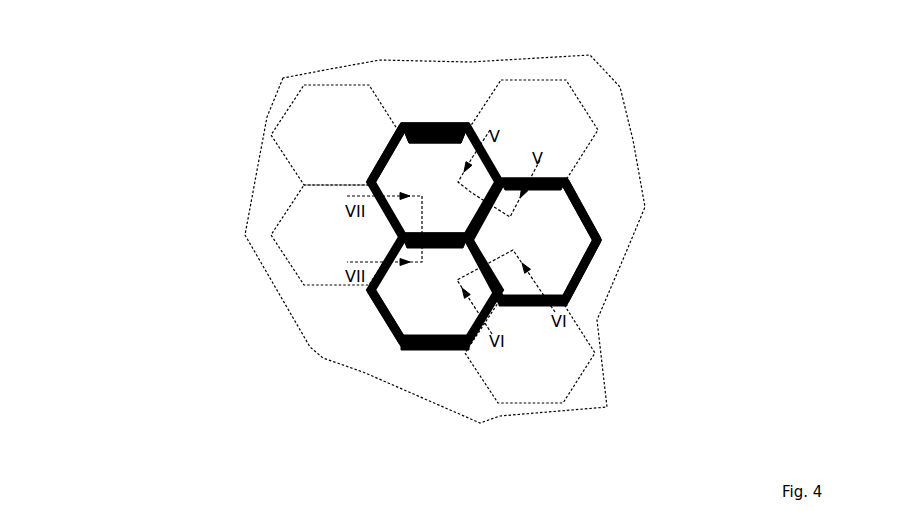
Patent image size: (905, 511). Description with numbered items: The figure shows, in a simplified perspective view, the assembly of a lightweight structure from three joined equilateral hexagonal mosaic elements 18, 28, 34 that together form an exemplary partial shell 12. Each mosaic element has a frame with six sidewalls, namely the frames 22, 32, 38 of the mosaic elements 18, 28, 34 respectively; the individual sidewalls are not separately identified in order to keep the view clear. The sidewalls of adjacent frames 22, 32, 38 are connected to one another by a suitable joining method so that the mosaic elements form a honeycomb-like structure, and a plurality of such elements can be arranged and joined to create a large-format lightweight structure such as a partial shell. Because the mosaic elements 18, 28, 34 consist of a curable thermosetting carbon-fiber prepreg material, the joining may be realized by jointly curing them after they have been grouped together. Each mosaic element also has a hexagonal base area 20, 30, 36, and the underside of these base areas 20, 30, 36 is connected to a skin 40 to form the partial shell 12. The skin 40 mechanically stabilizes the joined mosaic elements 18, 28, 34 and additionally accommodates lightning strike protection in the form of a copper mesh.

The partial shell 12 is at (355, 239).
The skin 40 is at (312, 128).
The mosaic element 18 is at (415, 158).
The frame 22 is at (438, 125).
The hexagonal base area 20 is at (421, 120).
The hexagonal base area 30 is at (618, 205).
The hexagonal base area 36 is at (396, 347).
The frame 32 is at (590, 193).
The mosaic element 28 is at (572, 232).
The mosaic element 34 is at (400, 310).
The frame 38 is at (430, 350).